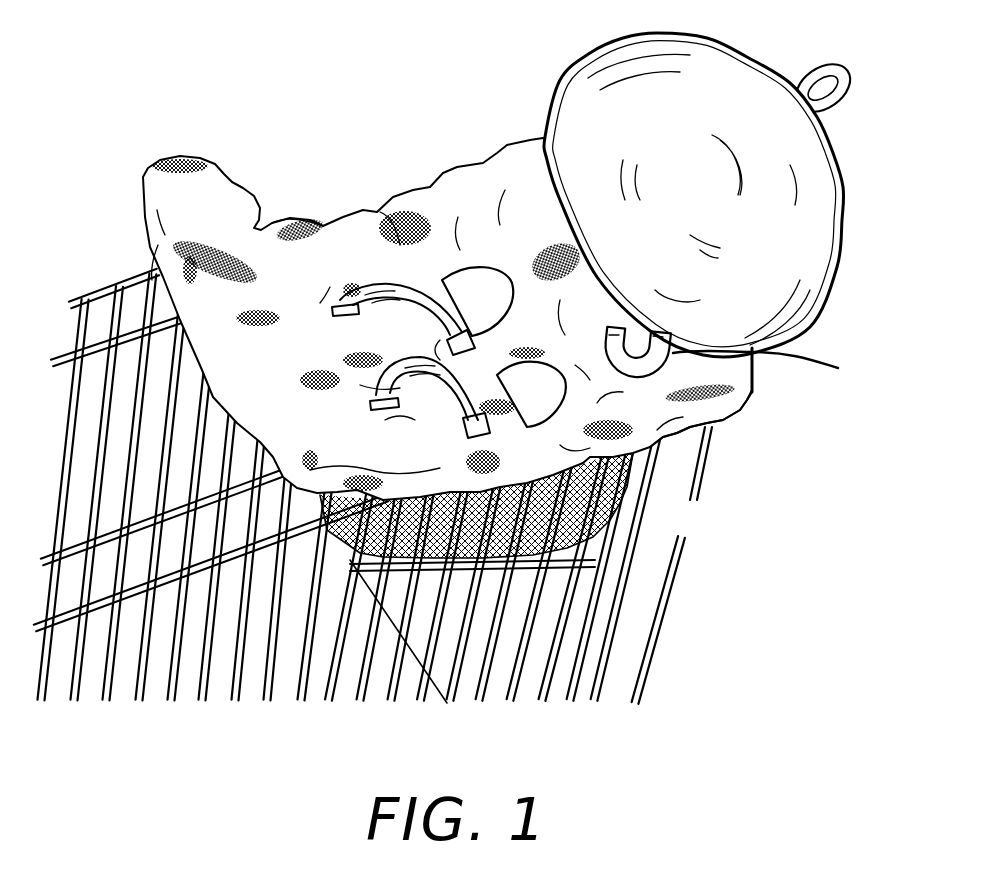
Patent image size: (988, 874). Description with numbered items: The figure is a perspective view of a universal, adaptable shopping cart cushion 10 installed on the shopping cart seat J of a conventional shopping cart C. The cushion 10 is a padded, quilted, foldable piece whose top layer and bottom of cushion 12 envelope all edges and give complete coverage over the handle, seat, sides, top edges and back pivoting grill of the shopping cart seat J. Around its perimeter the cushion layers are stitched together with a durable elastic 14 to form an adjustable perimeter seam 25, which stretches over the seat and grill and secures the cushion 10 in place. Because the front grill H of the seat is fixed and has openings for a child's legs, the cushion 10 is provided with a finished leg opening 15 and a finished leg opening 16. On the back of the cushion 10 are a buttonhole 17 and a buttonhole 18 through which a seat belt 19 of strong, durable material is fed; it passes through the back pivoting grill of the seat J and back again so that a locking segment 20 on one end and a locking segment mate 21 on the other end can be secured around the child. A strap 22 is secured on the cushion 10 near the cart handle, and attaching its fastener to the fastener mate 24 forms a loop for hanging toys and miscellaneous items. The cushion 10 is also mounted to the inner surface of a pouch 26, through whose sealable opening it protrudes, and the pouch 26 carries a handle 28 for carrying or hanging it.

The universal, adaptable shopping cart cushion 10 is at (128, 173).
The bottom of cushion 12 is at (560, 505).
The durable elastic 14 is at (690, 440).
The finished leg opening 15 is at (480, 273).
The finished leg opening 16 is at (684, 475).
The buttonhole 17 is at (313, 222).
The buttonhole 18 is at (390, 319).
The seat belt 19 is at (383, 212).
The locking segment 20 is at (493, 337).
The locking segment mate 21 is at (440, 450).
The strap 22 is at (753, 353).
The fastener mate 24 is at (753, 395).
The adjustable perimeter seam 25 is at (682, 437).
The pouch 26 is at (842, 210).
The handle 28 is at (848, 62).
The shopping cart C is at (96, 506).
The front grill H is at (735, 420).
The shopping cart seat J is at (335, 590).